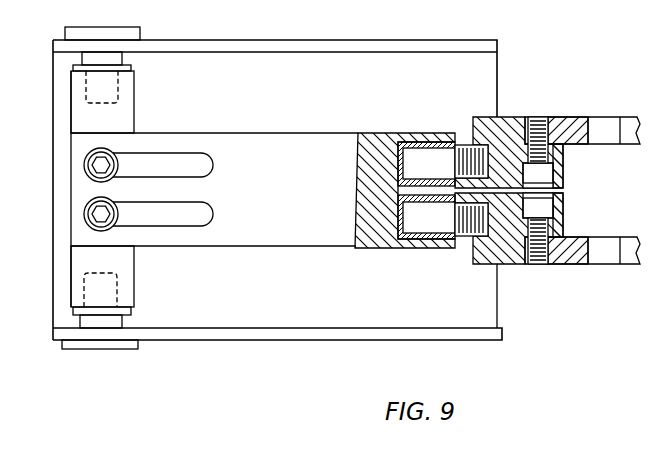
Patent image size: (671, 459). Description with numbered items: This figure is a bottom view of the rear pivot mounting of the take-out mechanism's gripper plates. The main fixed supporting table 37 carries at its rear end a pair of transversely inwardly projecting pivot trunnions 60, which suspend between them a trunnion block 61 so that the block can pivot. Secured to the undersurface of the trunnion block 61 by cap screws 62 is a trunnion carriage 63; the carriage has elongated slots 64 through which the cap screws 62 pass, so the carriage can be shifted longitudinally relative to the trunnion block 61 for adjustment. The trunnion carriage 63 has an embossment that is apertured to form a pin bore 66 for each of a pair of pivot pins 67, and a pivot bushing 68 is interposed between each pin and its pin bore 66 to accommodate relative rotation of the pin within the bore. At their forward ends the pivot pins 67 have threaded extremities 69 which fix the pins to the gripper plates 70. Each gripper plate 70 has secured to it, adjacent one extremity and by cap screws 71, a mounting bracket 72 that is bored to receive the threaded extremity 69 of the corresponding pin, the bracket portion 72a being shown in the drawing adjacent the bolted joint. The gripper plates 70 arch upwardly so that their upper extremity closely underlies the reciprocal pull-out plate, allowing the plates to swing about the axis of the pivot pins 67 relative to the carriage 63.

The main fixed supporting table 37 is at (282, 318).
The pivot trunnions 60 is at (90, 57).
The trunnion block 61 is at (127, 103).
The cap screws 62 is at (110, 178).
The trunnion carriage 63 is at (282, 117).
The elongated slots 64 is at (195, 173).
The pin bore 66 is at (428, 150).
The pivot pins 67 is at (412, 165).
The pivot bushing 68 is at (407, 142).
The threaded extremities 69 is at (468, 160).
The gripper plates 70 is at (583, 109).
The cap screws 71 is at (537, 117).
The mounting brackets 72 is at (515, 230).
The block leg 72a is at (563, 160).